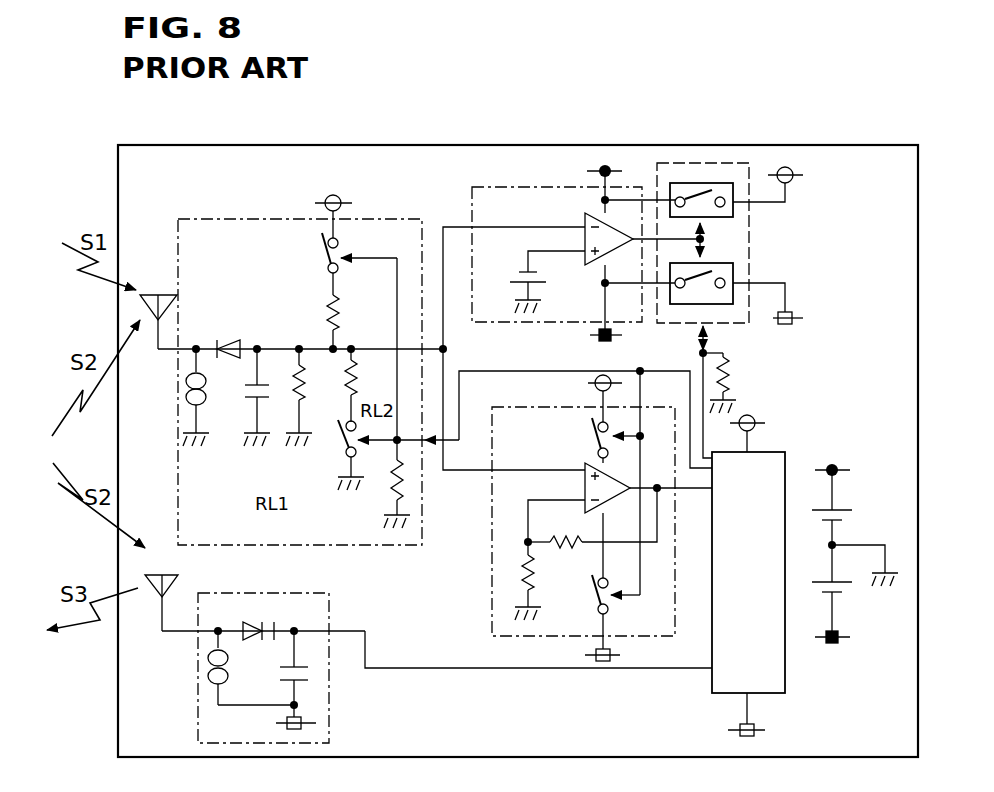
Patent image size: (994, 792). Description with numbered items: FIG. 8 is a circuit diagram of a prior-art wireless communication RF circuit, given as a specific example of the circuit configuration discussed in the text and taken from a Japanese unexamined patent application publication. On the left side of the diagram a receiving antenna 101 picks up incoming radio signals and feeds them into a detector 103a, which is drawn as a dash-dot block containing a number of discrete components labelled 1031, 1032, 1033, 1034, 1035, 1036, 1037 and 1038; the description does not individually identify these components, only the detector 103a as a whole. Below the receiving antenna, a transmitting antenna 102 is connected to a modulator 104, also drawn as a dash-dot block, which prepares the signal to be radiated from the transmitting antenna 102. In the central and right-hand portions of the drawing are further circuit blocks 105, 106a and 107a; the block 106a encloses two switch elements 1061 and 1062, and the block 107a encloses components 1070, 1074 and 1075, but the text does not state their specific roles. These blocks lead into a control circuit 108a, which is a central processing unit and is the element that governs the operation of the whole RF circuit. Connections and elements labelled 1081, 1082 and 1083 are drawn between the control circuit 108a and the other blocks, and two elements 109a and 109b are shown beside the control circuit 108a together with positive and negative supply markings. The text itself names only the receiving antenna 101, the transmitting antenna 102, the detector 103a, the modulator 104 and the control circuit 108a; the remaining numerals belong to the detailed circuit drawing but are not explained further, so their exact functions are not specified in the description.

The receiving antenna 101 is at (156, 293).
The transmitting antenna 102 is at (166, 575).
The detector 103a is at (212, 213).
The detection diode 1031 is at (222, 340).
The resistor 1032 is at (298, 402).
The capacitor 1033 is at (250, 402).
The switch 1034 is at (324, 248).
The resistor 1035 is at (322, 318).
The relay switch RL1 1036 is at (338, 443).
The resistor RL2 1037 is at (356, 353).
The resistor 1038 is at (390, 480).
The modulator 104 is at (290, 593).
The comparator circuit 105 is at (472, 197).
The switching circuit 106a is at (751, 216).
The first switch 1061 is at (693, 183).
The second switch 1062 is at (733, 265).
The amplifier circuit 107a is at (602, 518).
The operational amplifier 1070 is at (590, 462).
The switch 1074 is at (596, 438).
The switch 1075 is at (594, 588).
The control circuit (CPU) 108a is at (758, 452).
The control line 1081 is at (478, 371).
The control line 1082 is at (702, 350).
The pull-down resistor 1083 is at (728, 370).
The positive power supply battery 109a is at (838, 508).
The negative power supply battery 109b is at (838, 580).